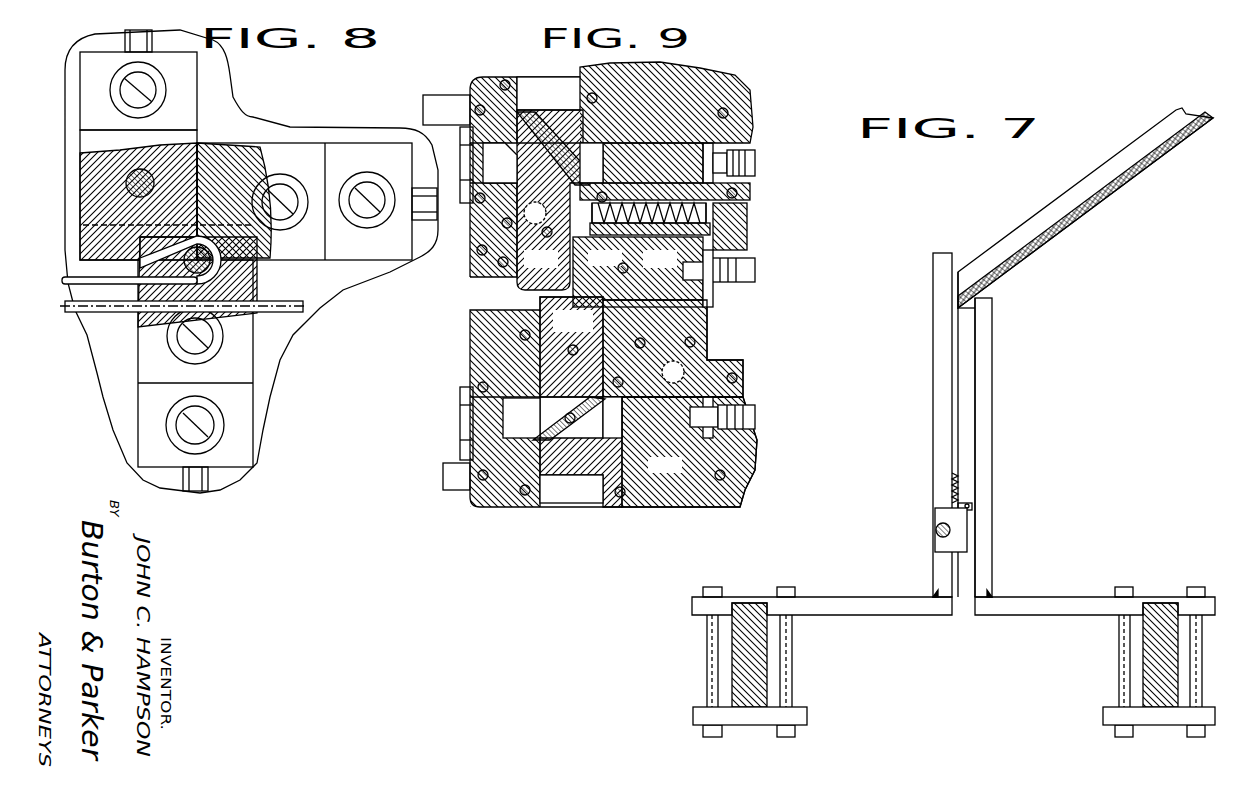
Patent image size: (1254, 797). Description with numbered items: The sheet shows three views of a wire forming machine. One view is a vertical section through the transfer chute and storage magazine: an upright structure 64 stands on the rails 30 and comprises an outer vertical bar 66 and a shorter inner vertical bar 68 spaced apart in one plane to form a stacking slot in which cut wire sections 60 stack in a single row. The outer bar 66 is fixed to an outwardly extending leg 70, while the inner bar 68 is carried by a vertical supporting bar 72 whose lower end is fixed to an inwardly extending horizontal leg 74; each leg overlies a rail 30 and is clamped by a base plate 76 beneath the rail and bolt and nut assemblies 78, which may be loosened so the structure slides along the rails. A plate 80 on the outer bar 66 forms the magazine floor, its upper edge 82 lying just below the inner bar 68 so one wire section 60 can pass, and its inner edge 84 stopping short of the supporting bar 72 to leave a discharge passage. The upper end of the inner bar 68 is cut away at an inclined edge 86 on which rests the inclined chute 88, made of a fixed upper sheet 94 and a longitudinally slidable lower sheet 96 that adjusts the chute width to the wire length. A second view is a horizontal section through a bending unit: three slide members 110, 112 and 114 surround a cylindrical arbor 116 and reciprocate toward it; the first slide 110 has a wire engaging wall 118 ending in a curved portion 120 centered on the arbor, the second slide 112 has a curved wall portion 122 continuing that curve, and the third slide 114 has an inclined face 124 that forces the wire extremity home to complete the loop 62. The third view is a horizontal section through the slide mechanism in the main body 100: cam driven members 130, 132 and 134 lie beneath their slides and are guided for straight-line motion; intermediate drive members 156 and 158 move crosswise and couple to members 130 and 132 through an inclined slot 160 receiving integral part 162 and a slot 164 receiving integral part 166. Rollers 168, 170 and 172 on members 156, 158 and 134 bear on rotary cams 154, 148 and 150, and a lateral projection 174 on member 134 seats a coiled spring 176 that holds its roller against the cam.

In FIG. 9, the rails 30 is at (450, 100).
In FIG. 7, the rails 30 is at (760, 676).
In FIG. 8, the wire section 60 is at (112, 285).
In FIG. 7, the wire section 60 is at (960, 490).
In FIG. 8, the loop or eye 62 is at (204, 240).
In FIG. 7, the upright structure 64 is at (932, 345).
In FIG. 7, the outer vertical bar 66 is at (940, 398).
In FIG. 7, the inner vertical bar 68 is at (965, 400).
In FIG. 7, the outwardly extending leg 70 is at (865, 597).
In FIG. 7, the vertical supporting bar 72 is at (988, 435).
In FIG. 7, the inwardly extending horizontal leg 74 is at (1076, 597).
In FIG. 7, the base plate 76 is at (702, 716).
In FIG. 7, the bolt and nut assemblies 78 is at (710, 643).
In FIG. 7, the plate 80 is at (935, 516).
In FIG. 7, the upper horizontal edge 82 is at (938, 508).
In FIG. 7, the inner edge 84 is at (967, 543).
In FIG. 7, the inclined edge 86 is at (962, 308).
In FIG. 7, the inclined trough or chute 88 is at (1095, 172).
In FIG. 7, the upper sheet 94 is at (1055, 228).
In FIG. 7, the lower sheet 96 is at (1117, 188).
In FIG. 9, the main body portion 100 is at (482, 344).
In FIG. 8, the first slide member 110 is at (212, 272).
In FIG. 8, the second slide member 112 is at (220, 160).
In FIG. 8, the third slide member 114 is at (122, 150).
In FIG. 8, the arbor 116 is at (205, 246).
In FIG. 8, the wire engaging wall 118 is at (168, 282).
In FIG. 8, the curved portion 120 is at (217, 283).
In FIG. 8, the curved wire engaging wall portion 122 is at (214, 248).
In FIG. 8, the inclined face 124 is at (162, 252).
In FIG. 9, the cam driven member 130 is at (585, 330).
In FIG. 9, the cam driven member 132 is at (558, 265).
In FIG. 9, the cam driven member 134 is at (675, 265).
In FIG. 9, the rotary cam 148 is at (757, 163).
In FIG. 9, the rotary cam 150 is at (757, 272).
In FIG. 9, the rotary cam 154 is at (757, 418).
In FIG. 9, the intermediate drive member 156 is at (683, 425).
In FIG. 9, the intermediate drive member 158 is at (648, 148).
In FIG. 9, the inclined slot 160 is at (560, 422).
In FIG. 9, the integral part 162 is at (578, 440).
In FIG. 9, the slot 164 is at (535, 165).
In FIG. 9, the integral part 166 is at (553, 140).
In FIG. 9, the roller 168 is at (723, 396).
In FIG. 9, the roller 170 is at (745, 142).
In FIG. 9, the roller 172 is at (718, 288).
In FIG. 9, the lateral projection 174 is at (750, 226).
In FIG. 9, the coiled spring 176 is at (616, 240).